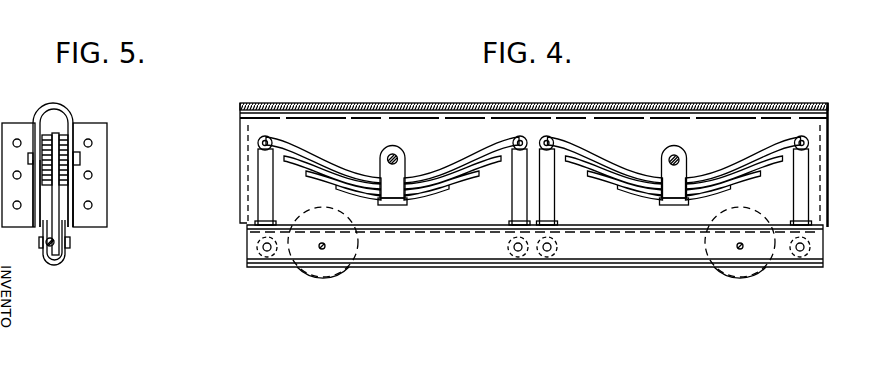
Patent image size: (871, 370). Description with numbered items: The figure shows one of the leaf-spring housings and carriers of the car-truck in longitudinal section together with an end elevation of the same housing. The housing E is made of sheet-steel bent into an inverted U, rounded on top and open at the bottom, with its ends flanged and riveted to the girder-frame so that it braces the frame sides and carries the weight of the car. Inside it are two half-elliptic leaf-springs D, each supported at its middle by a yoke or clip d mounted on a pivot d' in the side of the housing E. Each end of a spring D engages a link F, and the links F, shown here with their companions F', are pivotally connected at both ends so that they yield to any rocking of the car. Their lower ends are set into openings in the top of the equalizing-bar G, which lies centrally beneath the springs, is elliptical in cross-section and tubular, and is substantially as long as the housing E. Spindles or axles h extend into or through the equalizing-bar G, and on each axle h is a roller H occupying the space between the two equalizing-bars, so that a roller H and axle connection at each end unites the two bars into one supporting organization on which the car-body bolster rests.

In FIG. 5, the housing E is at (58, 159).
In FIG. 4, the housing E is at (534, 154).
In FIG. 5, the half-elliptic leaf-springs D is at (75, 167).
In FIG. 4, the half-elliptic leaf-springs D is at (607, 166).
In FIG. 5, the yoke or clip d is at (93, 194).
In FIG. 4, the yoke or clip d is at (532, 175).
In FIG. 5, the pivot d' is at (83, 150).
In FIG. 4, the pivot d' is at (533, 146).
In FIG. 5, the link F is at (80, 194).
In FIG. 4, the link F is at (820, 187).
In FIG. 4, the hanger posts F' is at (414, 187).
In FIG. 5, the equalizing-bar G is at (67, 258).
In FIG. 4, the equalizing-bar G is at (478, 270).
In FIG. 4, the roller H is at (740, 284).
In FIG. 4, the spindle or axle h is at (737, 246).